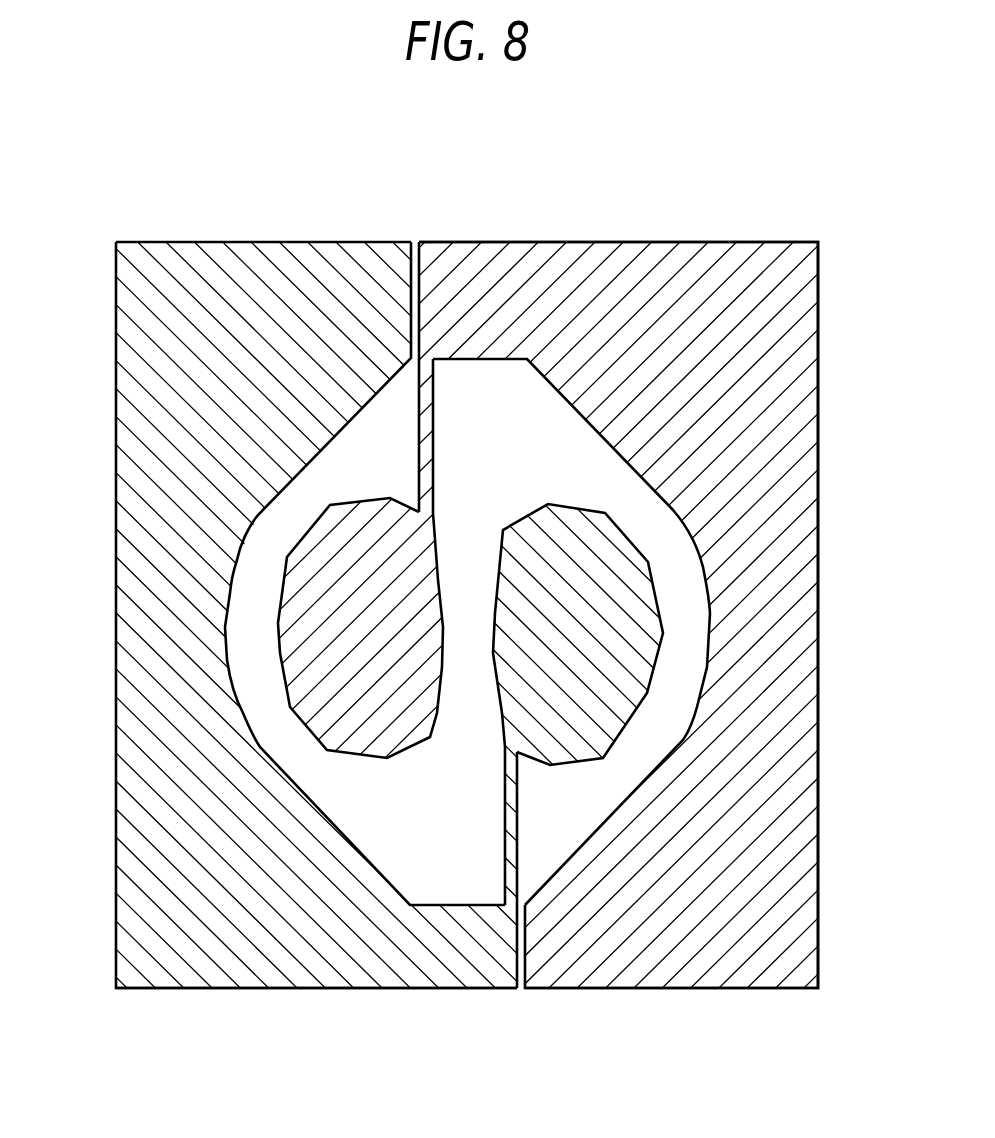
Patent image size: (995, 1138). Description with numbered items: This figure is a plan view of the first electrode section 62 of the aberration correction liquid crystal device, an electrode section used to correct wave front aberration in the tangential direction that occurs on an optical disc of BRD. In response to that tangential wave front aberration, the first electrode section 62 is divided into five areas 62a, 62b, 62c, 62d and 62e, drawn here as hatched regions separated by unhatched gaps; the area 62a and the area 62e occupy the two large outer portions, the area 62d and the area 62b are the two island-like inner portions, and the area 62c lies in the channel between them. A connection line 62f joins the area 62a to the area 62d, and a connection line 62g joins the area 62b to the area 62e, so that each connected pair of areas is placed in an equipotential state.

The first electrode section 62 is at (590, 236).
The area 62a is at (795, 398).
The area 62b is at (637, 620).
The area 62c is at (470, 690).
The area 62d is at (298, 613).
The area 62e is at (125, 484).
The connection line 62f is at (433, 425).
The connection line 62g is at (508, 850).